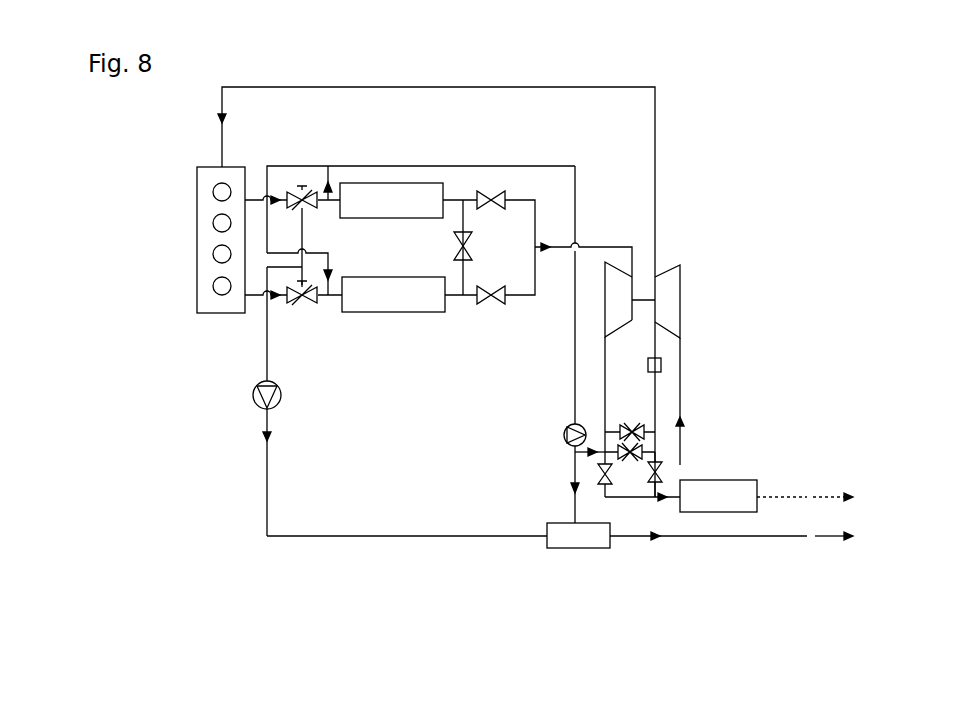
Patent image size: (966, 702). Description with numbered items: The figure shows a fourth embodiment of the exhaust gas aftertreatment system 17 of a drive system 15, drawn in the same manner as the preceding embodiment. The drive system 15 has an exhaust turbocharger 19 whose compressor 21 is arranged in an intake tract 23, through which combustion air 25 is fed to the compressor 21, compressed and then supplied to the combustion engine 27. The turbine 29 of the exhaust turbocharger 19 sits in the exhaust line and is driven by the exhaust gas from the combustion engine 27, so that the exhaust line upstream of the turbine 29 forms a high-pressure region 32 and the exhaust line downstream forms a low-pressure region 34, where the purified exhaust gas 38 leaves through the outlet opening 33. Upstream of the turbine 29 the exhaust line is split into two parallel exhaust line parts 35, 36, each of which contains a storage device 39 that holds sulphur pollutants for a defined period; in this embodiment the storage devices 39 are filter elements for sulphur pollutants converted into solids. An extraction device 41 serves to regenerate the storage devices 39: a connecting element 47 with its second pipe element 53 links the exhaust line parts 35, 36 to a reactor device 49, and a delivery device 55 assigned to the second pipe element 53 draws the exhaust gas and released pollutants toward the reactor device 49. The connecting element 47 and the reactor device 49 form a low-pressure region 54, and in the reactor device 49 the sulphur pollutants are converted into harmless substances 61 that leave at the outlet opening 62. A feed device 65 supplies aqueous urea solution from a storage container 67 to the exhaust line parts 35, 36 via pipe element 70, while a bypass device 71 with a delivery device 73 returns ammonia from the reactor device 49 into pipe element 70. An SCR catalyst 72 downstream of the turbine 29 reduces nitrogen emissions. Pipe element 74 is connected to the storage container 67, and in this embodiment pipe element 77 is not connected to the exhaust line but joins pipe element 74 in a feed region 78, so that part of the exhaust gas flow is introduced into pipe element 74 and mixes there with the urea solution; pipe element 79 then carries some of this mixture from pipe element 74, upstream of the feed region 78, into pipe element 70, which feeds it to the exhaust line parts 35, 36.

The drive system 15 is at (850, 120).
The exhaust gas aftertreatment system 17 is at (471, 318).
The exhaust turbocharger 19 is at (666, 260).
The compressor 21 is at (672, 307).
The intake tract 23 is at (617, 87).
The combustion air 25 is at (682, 451).
The combustion engine 27 is at (197, 203).
The turbine 29 is at (606, 363).
The high-pressure region 32 is at (570, 142).
The outlet opening 33 is at (808, 488).
The low-pressure region 34 is at (800, 427).
The exhaust line part 35 is at (461, 191).
The exhaust line part 36 is at (372, 313).
The purified exhaust gas 38 is at (832, 492).
The storage device 39 is at (400, 202).
The extraction device 41 is at (229, 402).
The connecting element 47 is at (233, 552).
The reactor device 49 is at (572, 548).
The second pipe element 53 is at (267, 498).
The low-pressure region 54 is at (502, 602).
The delivery device 55 is at (257, 384).
The harmless substances 61 is at (830, 540).
The outlet opening 62 is at (795, 540).
The feed device 65 is at (688, 548).
The storage container 67 is at (612, 321).
The pipe element 70 is at (576, 176).
The bypass device 71 is at (575, 513).
The SCR catalyst 72 is at (746, 490).
The delivery device 73 is at (563, 441).
The pipe element 74 is at (612, 388).
The pipe element 77 is at (642, 430).
The feed region 78 is at (659, 433).
The pipe element 79 is at (600, 468).